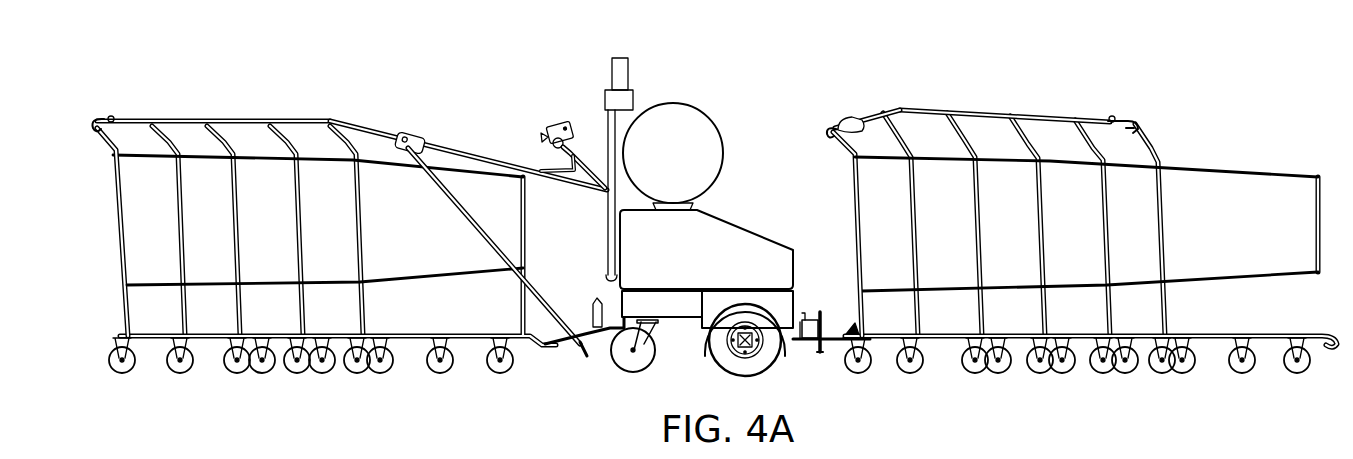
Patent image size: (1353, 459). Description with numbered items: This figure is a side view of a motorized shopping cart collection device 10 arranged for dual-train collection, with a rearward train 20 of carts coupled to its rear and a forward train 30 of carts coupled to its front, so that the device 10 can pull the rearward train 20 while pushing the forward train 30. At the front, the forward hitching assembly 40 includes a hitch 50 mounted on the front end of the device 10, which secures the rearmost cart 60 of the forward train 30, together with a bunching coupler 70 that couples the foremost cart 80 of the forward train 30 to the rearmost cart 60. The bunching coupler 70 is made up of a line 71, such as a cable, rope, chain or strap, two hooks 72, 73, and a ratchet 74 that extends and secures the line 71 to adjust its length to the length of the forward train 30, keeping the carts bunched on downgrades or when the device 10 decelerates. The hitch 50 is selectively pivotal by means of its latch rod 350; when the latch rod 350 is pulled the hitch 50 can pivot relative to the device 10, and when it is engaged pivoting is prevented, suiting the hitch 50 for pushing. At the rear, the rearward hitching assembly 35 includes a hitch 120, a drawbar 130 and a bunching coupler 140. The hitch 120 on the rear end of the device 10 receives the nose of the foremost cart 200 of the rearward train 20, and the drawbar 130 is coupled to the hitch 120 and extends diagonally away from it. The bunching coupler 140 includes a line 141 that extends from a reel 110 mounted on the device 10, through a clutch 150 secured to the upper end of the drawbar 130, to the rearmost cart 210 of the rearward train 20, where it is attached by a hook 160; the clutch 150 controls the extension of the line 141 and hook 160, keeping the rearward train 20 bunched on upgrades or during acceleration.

The motorized shopping cart collection device 10 is at (737, 217).
The rearward train 20 is at (312, 256).
The forward train 30 is at (1058, 245).
The rearward hitching assembly 35 is at (530, 85).
The forward hitching assembly 40 is at (1058, 221).
The hitch 50 is at (813, 352).
The rearmost cart 60 is at (853, 183).
The bunching coupler 70 is at (993, 112).
The line 71 is at (945, 110).
The hook 72 is at (829, 126).
The hook 73 is at (1131, 121).
The ratchet 74 is at (856, 118).
The foremost cart 80 is at (1256, 173).
The reel 110 is at (683, 120).
The hitch 120 is at (598, 345).
The drawbar 130 is at (545, 293).
The bunching coupler 140 is at (463, 148).
The line 141 is at (312, 119).
The clutch 150 is at (409, 135).
The hook 160 is at (97, 122).
The foremost cart 200 is at (420, 284).
The rearmost cart 210 is at (115, 252).
The latch rod 350 is at (812, 318).